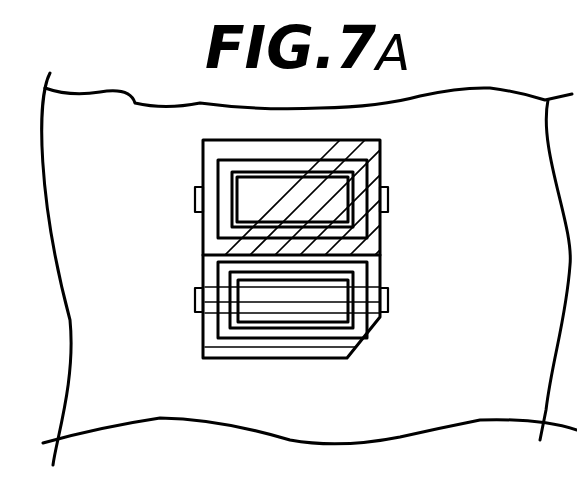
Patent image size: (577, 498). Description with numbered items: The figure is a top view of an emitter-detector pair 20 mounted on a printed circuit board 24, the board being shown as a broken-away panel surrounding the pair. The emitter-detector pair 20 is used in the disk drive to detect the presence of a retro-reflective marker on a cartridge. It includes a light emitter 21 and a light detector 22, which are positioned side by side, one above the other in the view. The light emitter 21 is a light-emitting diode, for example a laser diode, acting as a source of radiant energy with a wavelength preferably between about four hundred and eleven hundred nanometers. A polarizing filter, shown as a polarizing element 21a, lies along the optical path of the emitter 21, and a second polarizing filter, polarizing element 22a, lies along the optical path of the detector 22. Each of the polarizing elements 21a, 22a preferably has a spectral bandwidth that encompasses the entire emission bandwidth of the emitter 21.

The emitter-detector pair 20 is at (331, 261).
The light emitter 21 is at (330, 300).
The polarizing element 21a is at (229, 352).
The light detector 22 is at (332, 198).
The polarizing element 22a is at (258, 146).
The printed circuit board 24 is at (170, 405).